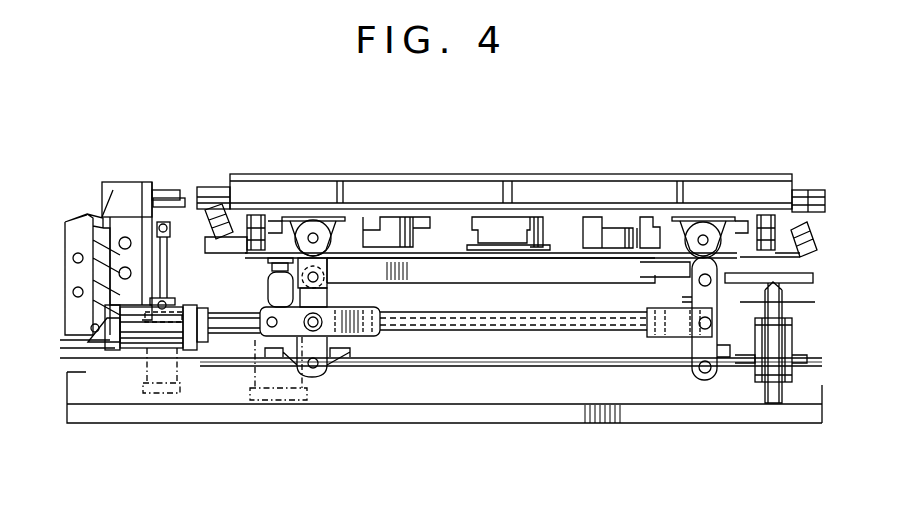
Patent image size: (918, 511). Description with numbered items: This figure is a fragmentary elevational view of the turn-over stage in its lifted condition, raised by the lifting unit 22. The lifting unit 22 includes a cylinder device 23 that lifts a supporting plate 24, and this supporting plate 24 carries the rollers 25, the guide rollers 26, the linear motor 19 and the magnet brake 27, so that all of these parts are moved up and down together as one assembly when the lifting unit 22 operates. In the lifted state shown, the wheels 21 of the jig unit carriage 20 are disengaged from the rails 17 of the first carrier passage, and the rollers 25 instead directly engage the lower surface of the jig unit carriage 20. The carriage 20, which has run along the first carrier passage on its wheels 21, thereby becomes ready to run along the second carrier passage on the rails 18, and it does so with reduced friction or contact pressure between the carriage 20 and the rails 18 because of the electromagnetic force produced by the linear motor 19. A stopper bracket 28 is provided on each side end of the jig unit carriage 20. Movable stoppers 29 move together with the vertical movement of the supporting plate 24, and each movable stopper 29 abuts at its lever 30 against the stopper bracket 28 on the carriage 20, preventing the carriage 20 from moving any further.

The rails 17 is at (570, 223).
The rails 18 is at (271, 234).
The linear motor 19 is at (420, 217).
The jig unit carriage 20 is at (372, 178).
The wheels 21 is at (328, 238).
The lifting unit 22 is at (510, 372).
The cylinder device 23 is at (255, 378).
The supporting plate 24 is at (452, 263).
The rollers 25 is at (255, 218).
The guide rollers 26 is at (203, 185).
The magnet brake 27 is at (532, 217).
The stopper bracket 28 is at (215, 182).
The movable stopper 29 is at (90, 185).
The lever 30 is at (135, 187).